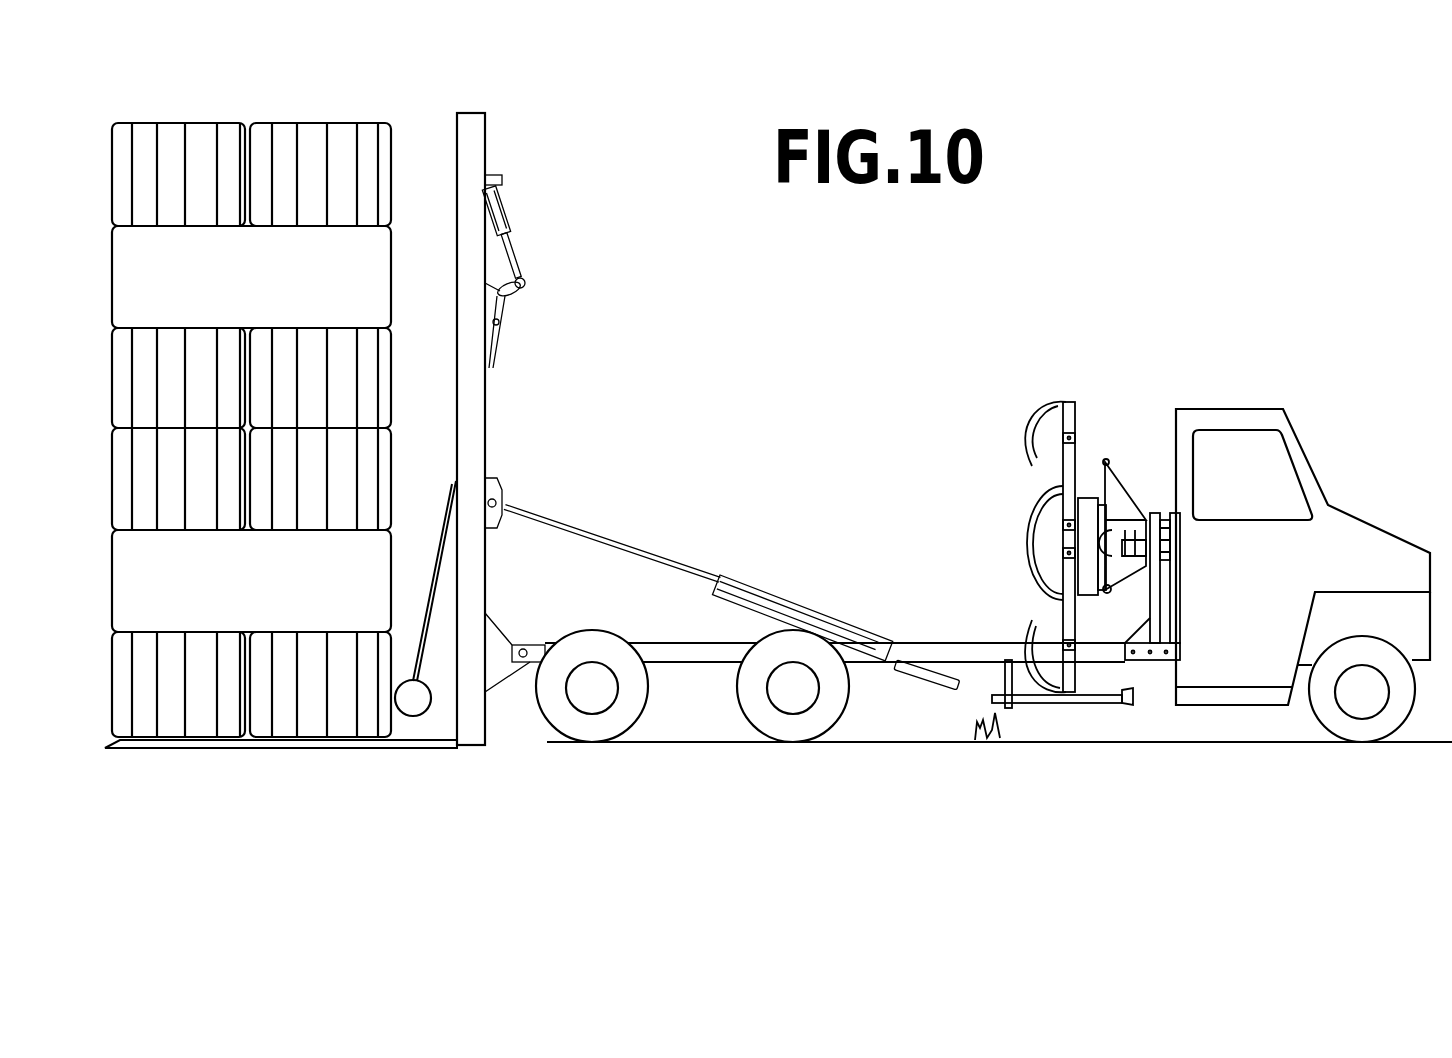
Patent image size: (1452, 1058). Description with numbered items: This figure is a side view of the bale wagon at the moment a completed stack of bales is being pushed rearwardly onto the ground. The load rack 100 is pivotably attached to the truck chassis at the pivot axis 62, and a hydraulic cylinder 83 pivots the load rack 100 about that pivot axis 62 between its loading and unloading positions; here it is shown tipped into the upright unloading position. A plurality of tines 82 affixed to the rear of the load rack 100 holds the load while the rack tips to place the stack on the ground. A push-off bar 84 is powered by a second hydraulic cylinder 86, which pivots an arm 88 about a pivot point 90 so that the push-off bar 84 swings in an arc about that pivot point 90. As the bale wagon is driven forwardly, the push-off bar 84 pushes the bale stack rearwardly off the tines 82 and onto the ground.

The load rack 100 is at (478, 127).
The hydraulic cylinder 86 is at (505, 212).
The pivot point 90 is at (518, 293).
The arm 88 is at (443, 540).
The pivot axis 62 is at (530, 648).
The hydraulic cylinder 83 is at (770, 602).
The push-off bar 84 is at (410, 705).
The tines 82 is at (433, 742).